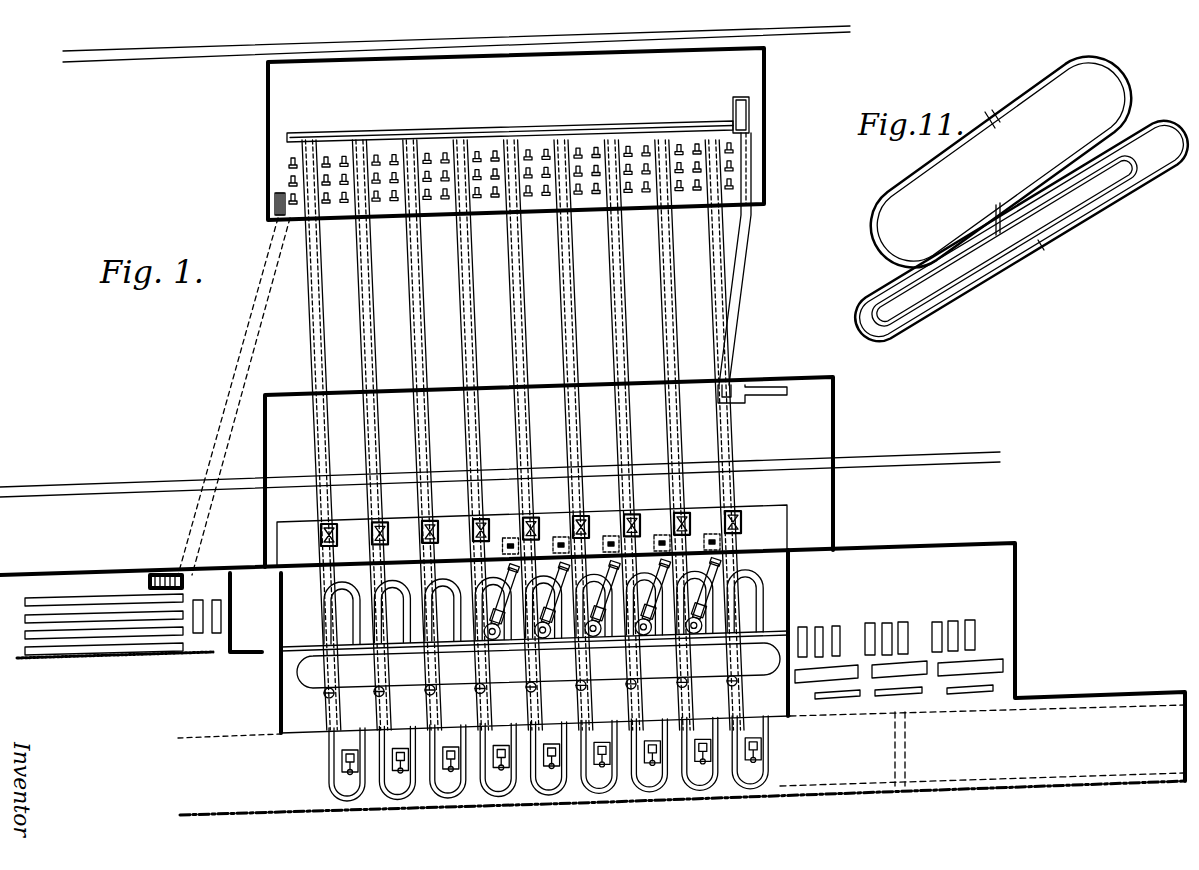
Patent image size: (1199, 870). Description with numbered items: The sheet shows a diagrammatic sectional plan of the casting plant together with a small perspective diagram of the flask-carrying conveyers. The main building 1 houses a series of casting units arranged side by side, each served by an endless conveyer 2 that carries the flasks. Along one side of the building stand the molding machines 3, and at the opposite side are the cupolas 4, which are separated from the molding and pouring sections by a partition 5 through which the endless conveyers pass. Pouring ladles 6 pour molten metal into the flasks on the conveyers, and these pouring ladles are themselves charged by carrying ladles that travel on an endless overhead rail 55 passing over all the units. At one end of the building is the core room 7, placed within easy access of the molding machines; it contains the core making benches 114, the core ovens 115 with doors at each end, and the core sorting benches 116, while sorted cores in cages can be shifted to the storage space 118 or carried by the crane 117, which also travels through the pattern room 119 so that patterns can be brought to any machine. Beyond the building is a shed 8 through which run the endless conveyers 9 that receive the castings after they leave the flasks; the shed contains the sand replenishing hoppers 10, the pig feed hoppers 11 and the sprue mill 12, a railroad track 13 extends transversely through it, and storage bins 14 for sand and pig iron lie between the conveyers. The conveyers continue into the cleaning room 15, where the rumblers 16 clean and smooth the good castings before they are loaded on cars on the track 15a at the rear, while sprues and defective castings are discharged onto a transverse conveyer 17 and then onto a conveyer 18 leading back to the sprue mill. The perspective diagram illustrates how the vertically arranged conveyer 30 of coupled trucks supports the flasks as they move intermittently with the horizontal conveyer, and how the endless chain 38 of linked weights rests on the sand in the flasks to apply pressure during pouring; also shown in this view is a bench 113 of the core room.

In FIG. 1, the main building 1 is at (982, 745).
In FIG. 1, the endless conveyers 2 is at (328, 755).
In FIG. 11, the endless conveyers 2 is at (975, 288).
In FIG. 1, the molding machines 3 is at (448, 766).
In FIG. 1, the cupolas 4 is at (602, 598).
In FIG. 1, the partition 5 is at (318, 649).
In FIG. 1, the pouring ladles 6 is at (332, 698).
In FIG. 1, the core room 7 is at (869, 622).
In FIG. 1, the shed 8 is at (592, 579).
In FIG. 1, the endless conveyers 9 is at (677, 416).
In FIG. 1, the sand replenishing hoppers 10 is at (738, 512).
In FIG. 1, the pig feed hoppers 11 is at (722, 543).
In FIG. 1, the sprue mill 12 is at (752, 408).
In FIG. 1, the railroad track 13 is at (805, 452).
In FIG. 1, the storage bins 14 is at (596, 446).
In FIG. 1, the cleaning room 15 is at (516, 134).
In FIG. 1, the track 15a is at (800, 36).
In FIG. 1, the rumblers 16 is at (502, 168).
In FIG. 1, the transverse conveyer 17 is at (443, 133).
In FIG. 1, the conveyer 18 is at (746, 240).
In FIG. 11, the vertically arranged conveyer 30 is at (1135, 158).
In FIG. 11, the endless chain of weights 38 is at (1035, 85).
In FIG. 1, the endless overhead rail 55 is at (538, 665).
In FIG. 1, the bench 113 is at (888, 669).
In FIG. 1, the core making benches 114 is at (968, 619).
In FIG. 1, the core ovens 115 is at (980, 660).
In FIG. 1, the core sorting benches 116 is at (966, 694).
In FIG. 1, the crane 117 is at (896, 748).
In FIG. 1, the storage space 118 is at (1088, 742).
In FIG. 1, the pattern room 119 is at (601, 516).